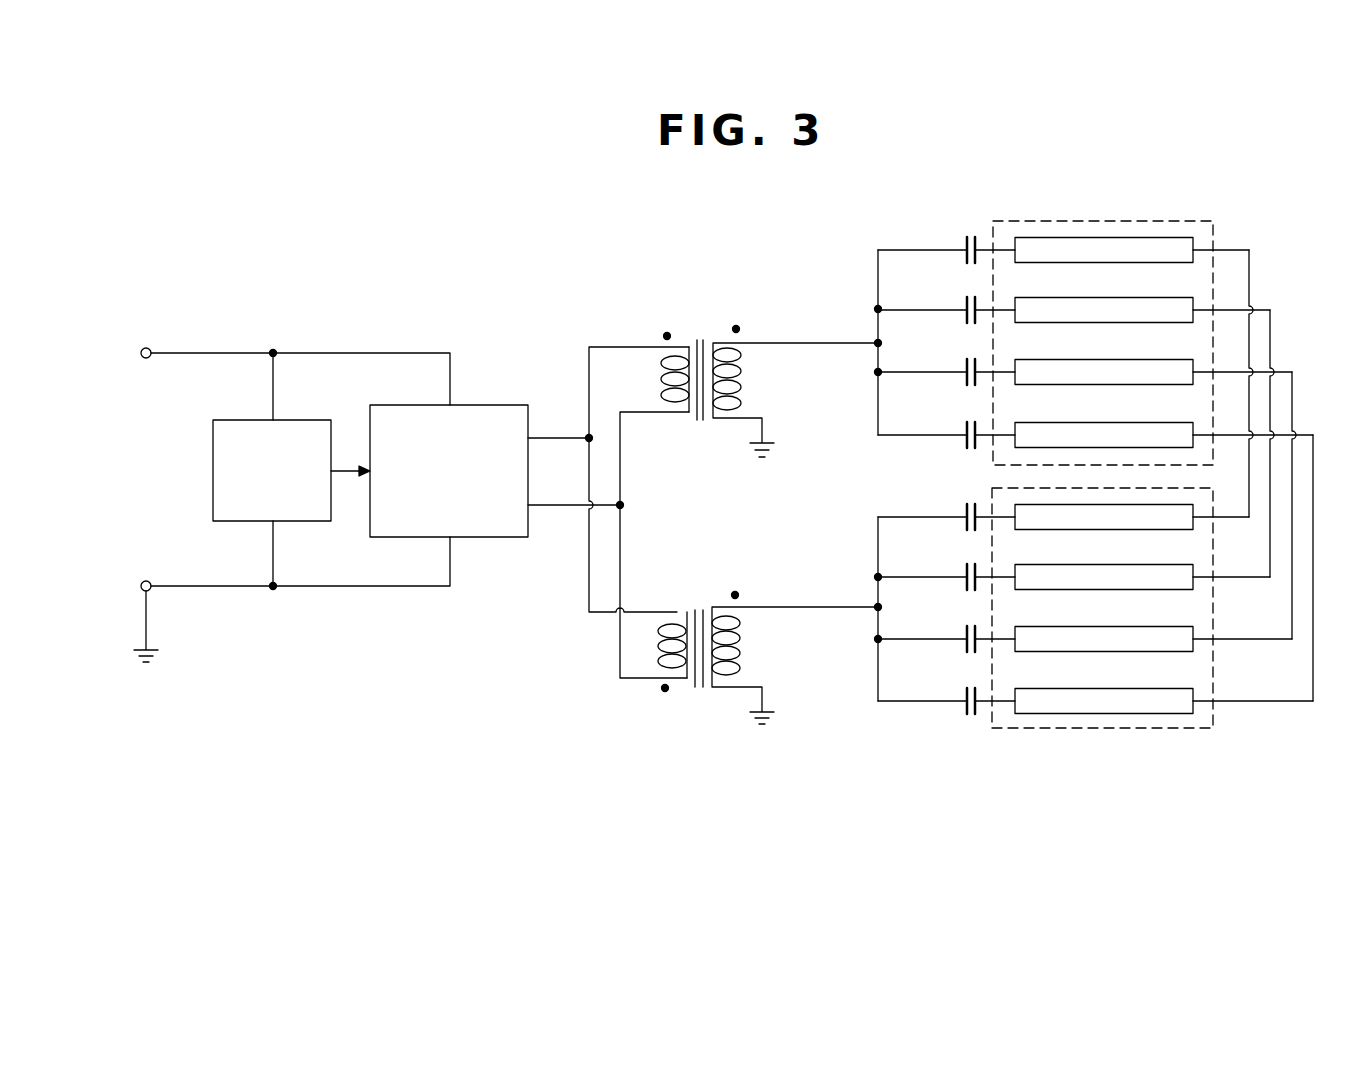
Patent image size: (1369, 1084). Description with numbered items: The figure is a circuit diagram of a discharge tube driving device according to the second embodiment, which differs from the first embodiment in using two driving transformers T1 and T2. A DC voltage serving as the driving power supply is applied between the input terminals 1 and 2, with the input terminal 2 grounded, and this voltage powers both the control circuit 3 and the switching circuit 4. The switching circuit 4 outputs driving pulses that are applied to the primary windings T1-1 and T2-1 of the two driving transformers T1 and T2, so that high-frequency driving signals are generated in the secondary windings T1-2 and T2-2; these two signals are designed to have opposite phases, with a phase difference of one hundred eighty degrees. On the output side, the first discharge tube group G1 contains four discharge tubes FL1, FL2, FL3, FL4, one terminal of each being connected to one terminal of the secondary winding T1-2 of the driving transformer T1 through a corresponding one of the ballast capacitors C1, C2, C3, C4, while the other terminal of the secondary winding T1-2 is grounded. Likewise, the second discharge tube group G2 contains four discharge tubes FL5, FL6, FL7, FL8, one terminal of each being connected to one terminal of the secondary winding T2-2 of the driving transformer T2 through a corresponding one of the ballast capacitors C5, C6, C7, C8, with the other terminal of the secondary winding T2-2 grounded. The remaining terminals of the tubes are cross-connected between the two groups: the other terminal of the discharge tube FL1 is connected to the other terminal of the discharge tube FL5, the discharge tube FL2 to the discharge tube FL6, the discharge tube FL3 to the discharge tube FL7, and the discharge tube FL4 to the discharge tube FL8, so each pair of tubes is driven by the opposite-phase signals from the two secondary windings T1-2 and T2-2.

The input terminal 1 is at (147, 348).
The input terminal 2 is at (147, 581).
The control circuit 3 is at (290, 420).
The switching circuit 4 is at (474, 405).
The driving transformer T1 is at (763, 396).
The primary winding T1-1 is at (684, 416).
The secondary winding T1-2 is at (742, 378).
The driving transformer T2 is at (763, 663).
The primary winding T2-1 is at (682, 683).
The secondary winding T2-2 is at (740, 646).
The ballast capacitor C1 is at (962, 242).
The ballast capacitor C2 is at (962, 302).
The ballast capacitor C3 is at (962, 364).
The ballast capacitor C4 is at (962, 427).
The ballast capacitor C5 is at (962, 509).
The ballast capacitor C6 is at (962, 569).
The ballast capacitor C7 is at (962, 631).
The ballast capacitor C8 is at (962, 693).
The discharge tube FL1 is at (1167, 238).
The discharge tube FL2 is at (1117, 298).
The discharge tube FL3 is at (1117, 360).
The discharge tube FL4 is at (1117, 423).
The discharge tube FL5 is at (1118, 530).
The discharge tube FL6 is at (1118, 590).
The discharge tube FL7 is at (1118, 652).
The discharge tube FL8 is at (1148, 717).
The first discharge tube group G1 is at (1153, 320).
The second discharge tube group G2 is at (1152, 636).